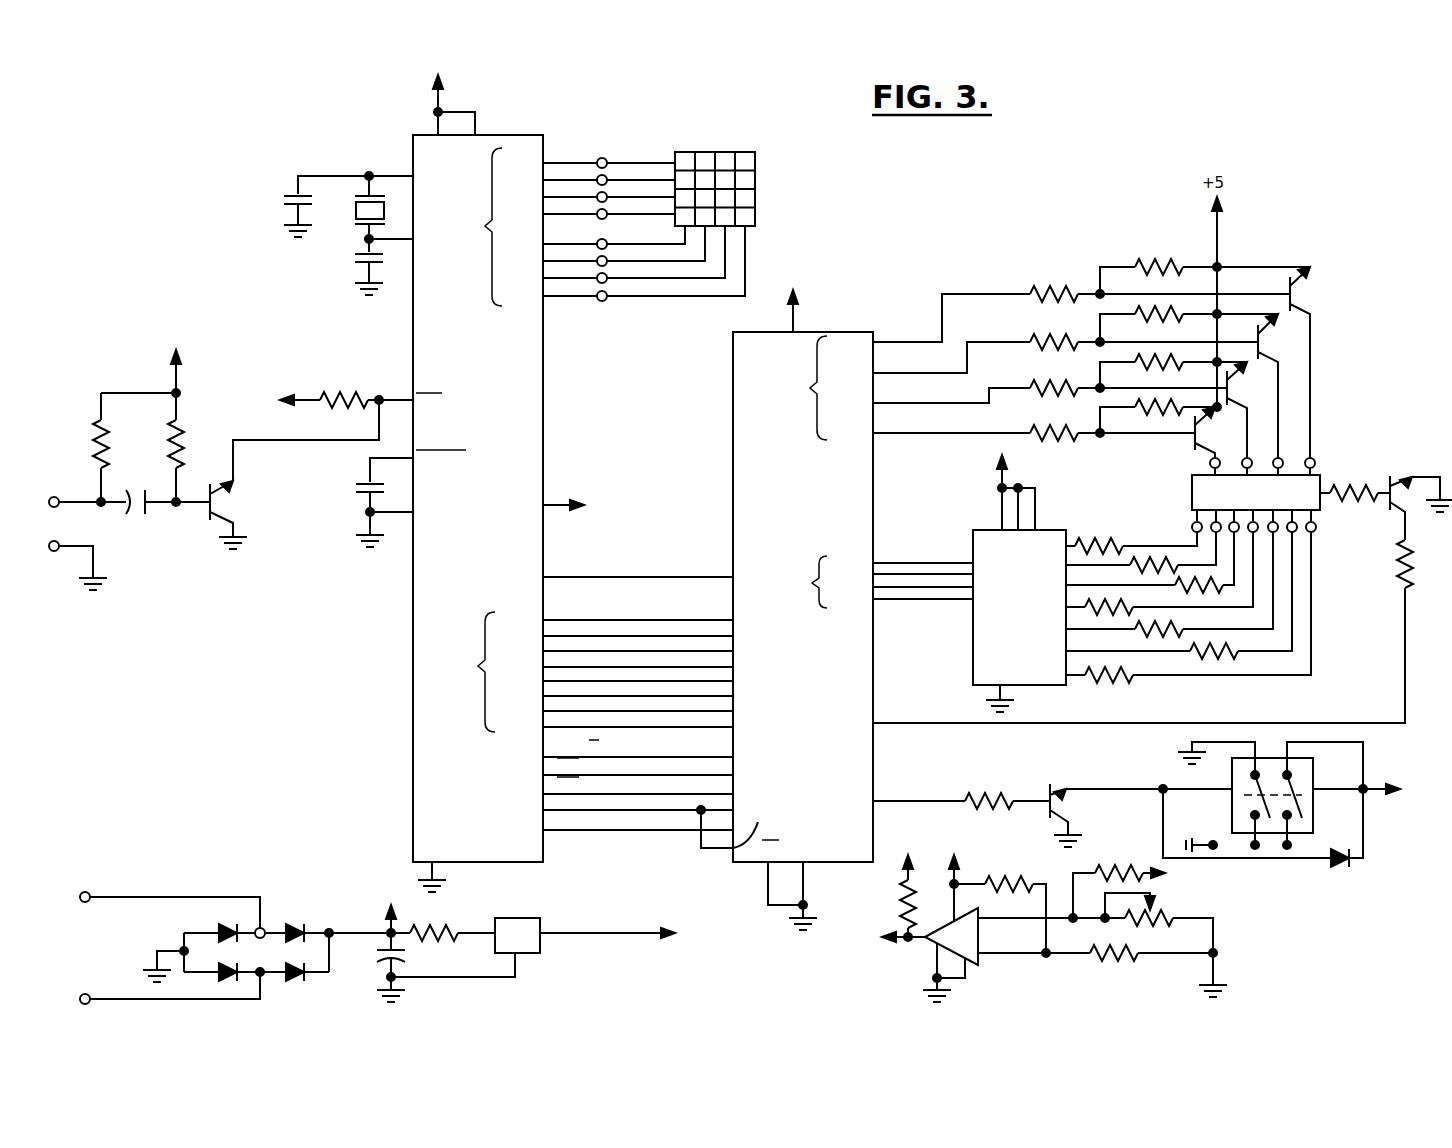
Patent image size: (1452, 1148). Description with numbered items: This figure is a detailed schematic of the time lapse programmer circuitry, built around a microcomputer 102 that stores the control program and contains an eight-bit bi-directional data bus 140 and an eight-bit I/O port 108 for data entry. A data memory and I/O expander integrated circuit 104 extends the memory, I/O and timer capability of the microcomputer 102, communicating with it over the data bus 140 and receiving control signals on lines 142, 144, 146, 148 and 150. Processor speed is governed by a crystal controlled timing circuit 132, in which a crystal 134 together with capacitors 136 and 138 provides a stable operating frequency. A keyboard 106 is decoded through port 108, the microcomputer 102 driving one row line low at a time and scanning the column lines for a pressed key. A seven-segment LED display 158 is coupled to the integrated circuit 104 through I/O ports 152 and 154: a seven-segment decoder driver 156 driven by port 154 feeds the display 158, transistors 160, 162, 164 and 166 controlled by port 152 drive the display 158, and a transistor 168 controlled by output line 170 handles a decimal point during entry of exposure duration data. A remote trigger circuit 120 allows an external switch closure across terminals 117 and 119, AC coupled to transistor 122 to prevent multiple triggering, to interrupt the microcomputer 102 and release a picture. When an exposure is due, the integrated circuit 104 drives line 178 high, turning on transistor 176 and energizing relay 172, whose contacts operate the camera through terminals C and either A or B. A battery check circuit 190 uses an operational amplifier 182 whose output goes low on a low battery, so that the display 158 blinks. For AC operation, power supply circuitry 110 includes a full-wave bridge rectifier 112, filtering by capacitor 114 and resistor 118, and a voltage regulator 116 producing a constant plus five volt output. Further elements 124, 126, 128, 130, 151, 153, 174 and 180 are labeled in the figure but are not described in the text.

The microcomputer 102 is at (522, 133).
The data memory and I/O expander integrated circuit 104 is at (733, 360).
The keyboard 106 is at (716, 152).
The I/O port 108 is at (598, 227).
The AC power supply circuitry 110 is at (391, 917).
The full-wave bridge rectifier circuit 112 is at (270, 922).
The capacitor 114 is at (378, 962).
The voltage regulator 116 is at (508, 918).
The terminal 117 is at (56, 496).
The resistor 118 is at (454, 941).
The terminal 119 is at (72, 565).
The remote trigger circuit 120 is at (208, 472).
The transistor 122 is at (236, 506).
The resistor 124 is at (98, 430).
The resistor 126 is at (186, 444).
The capacitor 128 is at (136, 514).
The pull-up resistor 130 is at (334, 394).
The crystal controlled timing circuit 132 is at (313, 219).
The crystal 134 is at (357, 208).
The capacitor 136 is at (362, 268).
The capacitor 138 is at (296, 200).
The data bus 140 is at (585, 664).
The control signal line 142 is at (543, 757).
The control signal line 144 is at (543, 775).
The control signal line 146 is at (543, 794).
The control signal line 148 is at (543, 810).
The control signal line 150 is at (543, 830).
The timer out line 151 is at (598, 577).
The I/O port 152 is at (940, 363).
The P25 battery line 153 is at (552, 503).
The I/O port 154 is at (877, 583).
The seven-segment decoder driver 156 is at (970, 528).
The display 158 is at (1320, 476).
The transistor 160 is at (1195, 438).
The transistor 162 is at (1240, 404).
The transistor 164 is at (1270, 360).
The transistor 166 is at (1298, 310).
The transistor 168 is at (1393, 488).
The output line 170 is at (1405, 634).
The relay 172 is at (1232, 805).
The diode 174 is at (1350, 868).
The transistor 176 is at (1066, 818).
The line 178 is at (914, 798).
The relay output circuit 180 is at (1287, 833).
The operational amplifier 182 is at (978, 960).
The battery check circuit 190 is at (1082, 917).